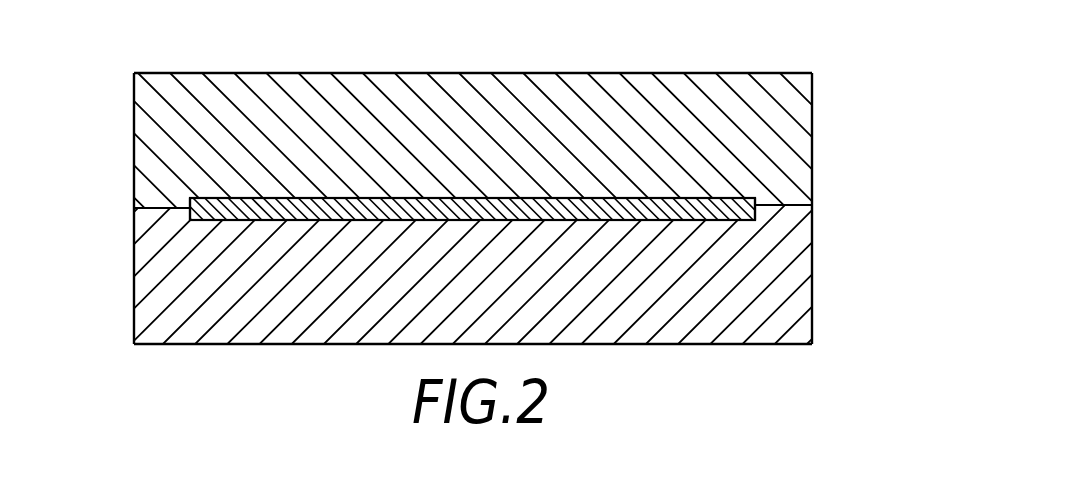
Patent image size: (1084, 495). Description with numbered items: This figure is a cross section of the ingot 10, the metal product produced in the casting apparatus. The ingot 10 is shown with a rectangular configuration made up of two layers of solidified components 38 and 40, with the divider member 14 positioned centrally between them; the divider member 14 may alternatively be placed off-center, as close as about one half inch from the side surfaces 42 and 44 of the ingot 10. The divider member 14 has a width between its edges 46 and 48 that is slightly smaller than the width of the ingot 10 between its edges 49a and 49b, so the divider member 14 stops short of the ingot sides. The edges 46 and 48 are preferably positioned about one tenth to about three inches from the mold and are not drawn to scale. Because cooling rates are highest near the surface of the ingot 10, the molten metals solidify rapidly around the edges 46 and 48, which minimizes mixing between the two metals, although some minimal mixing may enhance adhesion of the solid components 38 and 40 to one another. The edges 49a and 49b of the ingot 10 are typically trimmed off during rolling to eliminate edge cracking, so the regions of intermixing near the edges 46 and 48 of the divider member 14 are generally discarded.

The ingot 10 is at (850, 75).
The divider member 14 is at (190, 198).
The component 38 is at (812, 286).
The component 40 is at (812, 138).
The side surface 42 is at (500, 73).
The side surface 44 is at (732, 345).
The edge 46 is at (190, 202).
The edge 48 is at (812, 204).
The edge 49a is at (133, 287).
The edge 49b is at (812, 318).